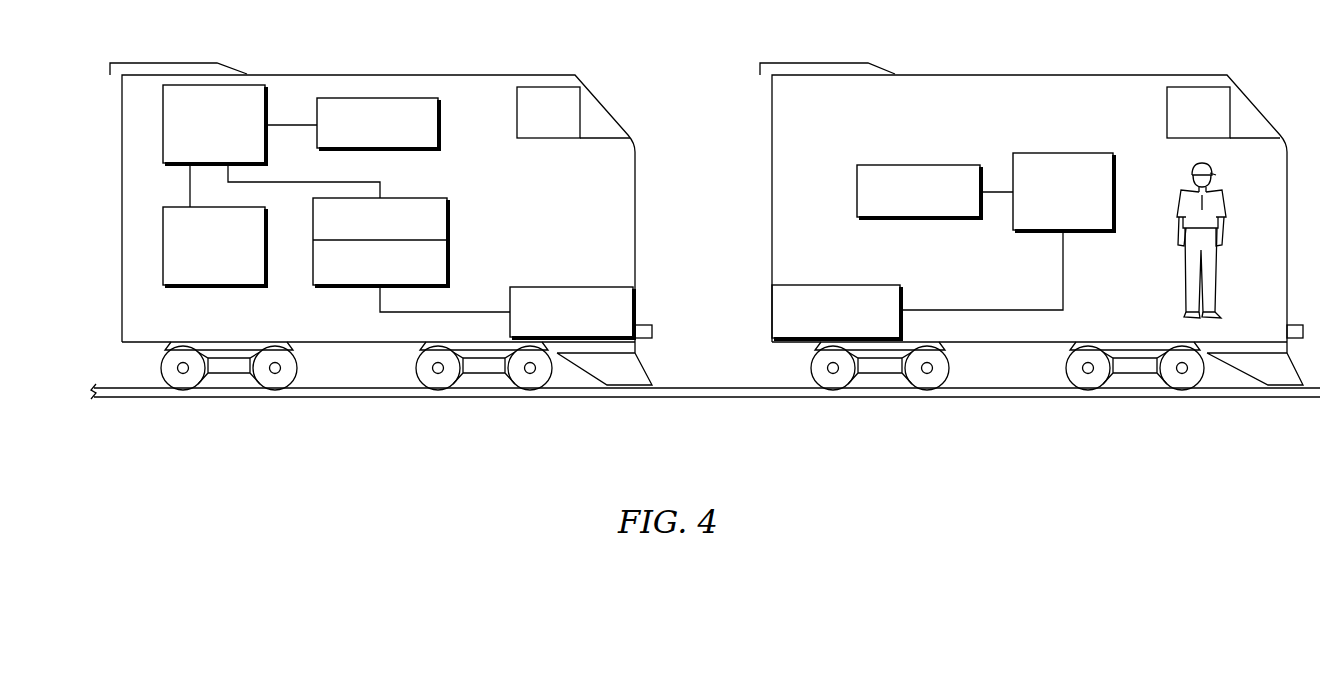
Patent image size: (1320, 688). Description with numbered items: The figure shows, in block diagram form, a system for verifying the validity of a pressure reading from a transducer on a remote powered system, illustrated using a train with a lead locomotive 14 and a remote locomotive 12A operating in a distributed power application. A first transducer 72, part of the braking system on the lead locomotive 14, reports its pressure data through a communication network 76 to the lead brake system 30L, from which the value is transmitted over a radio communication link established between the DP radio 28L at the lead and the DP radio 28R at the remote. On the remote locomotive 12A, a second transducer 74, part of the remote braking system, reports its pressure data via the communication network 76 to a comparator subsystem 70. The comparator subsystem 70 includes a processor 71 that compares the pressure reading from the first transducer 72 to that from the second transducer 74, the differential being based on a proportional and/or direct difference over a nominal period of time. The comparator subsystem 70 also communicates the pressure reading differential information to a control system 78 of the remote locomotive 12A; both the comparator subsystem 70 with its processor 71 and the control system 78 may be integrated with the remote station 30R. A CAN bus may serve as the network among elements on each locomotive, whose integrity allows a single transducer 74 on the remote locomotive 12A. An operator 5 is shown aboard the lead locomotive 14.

The operator 5 is at (1215, 287).
The remote locomotive 12A is at (537, 74).
The lead locomotive 14 is at (1186, 74).
The DP radio at the remote 28R is at (378, 98).
The DP radio at the lead 28L is at (910, 164).
The remote station 30R is at (163, 124).
The lead brake system (lead station) 30L is at (1055, 153).
The comparator subsystem 70 is at (449, 210).
The processor 71 is at (343, 287).
The first transducer 72 is at (838, 285).
The second transducer 74 is at (560, 287).
The communication network 76 is at (290, 124).
The control system 78 is at (215, 287).